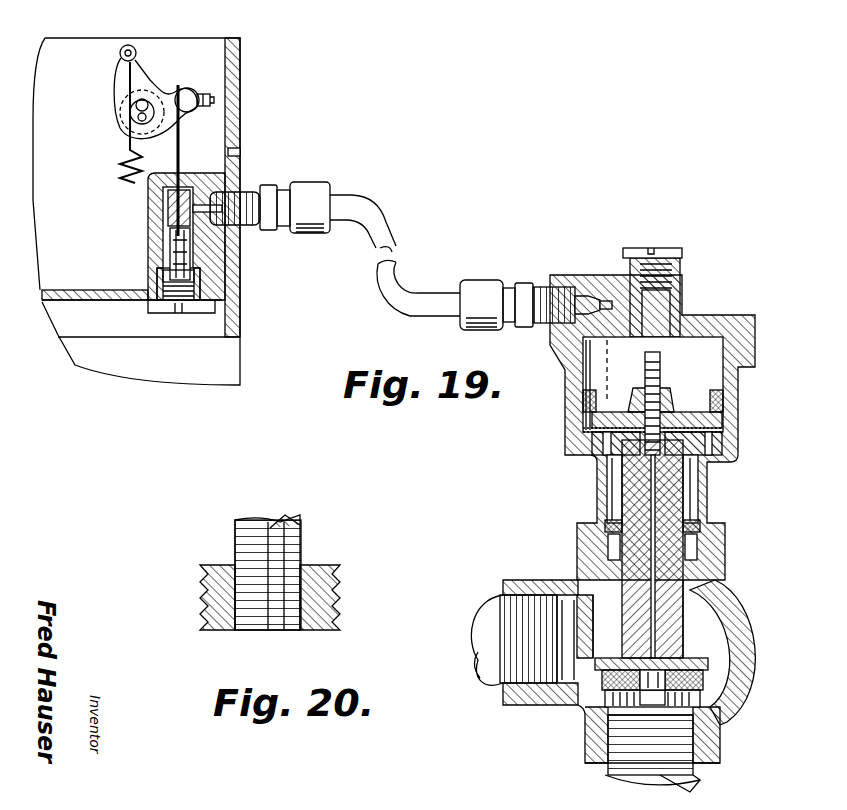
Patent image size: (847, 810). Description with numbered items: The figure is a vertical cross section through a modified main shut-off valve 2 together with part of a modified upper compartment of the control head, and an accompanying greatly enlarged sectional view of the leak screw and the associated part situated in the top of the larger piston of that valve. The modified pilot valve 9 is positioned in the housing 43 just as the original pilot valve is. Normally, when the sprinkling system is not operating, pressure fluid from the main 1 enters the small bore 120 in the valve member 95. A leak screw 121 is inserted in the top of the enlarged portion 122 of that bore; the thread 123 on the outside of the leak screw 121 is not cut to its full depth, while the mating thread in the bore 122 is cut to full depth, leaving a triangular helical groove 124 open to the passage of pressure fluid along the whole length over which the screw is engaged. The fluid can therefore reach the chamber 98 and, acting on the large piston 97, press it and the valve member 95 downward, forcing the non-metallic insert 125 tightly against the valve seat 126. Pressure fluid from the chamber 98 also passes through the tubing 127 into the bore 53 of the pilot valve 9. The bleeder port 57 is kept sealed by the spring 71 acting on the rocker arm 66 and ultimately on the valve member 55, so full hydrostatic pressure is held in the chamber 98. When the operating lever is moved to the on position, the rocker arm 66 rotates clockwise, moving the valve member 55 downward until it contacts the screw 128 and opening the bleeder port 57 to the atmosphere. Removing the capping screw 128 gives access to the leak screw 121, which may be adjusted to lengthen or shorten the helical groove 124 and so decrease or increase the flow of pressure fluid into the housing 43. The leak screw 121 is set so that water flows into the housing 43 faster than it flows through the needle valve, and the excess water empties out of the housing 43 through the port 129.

In FIG. 19, the main 1 is at (700, 782).
In FIG. 19, the main shut-off valve 2 is at (748, 640).
In FIG. 19, the pilot valve 9 is at (150, 205).
In FIG. 19, the housing 43 is at (243, 115).
In FIG. 19, the bore 53 is at (170, 236).
In FIG. 19, the valve member 55 is at (168, 192).
In FIG. 19, the bleeder port 57 is at (180, 188).
In FIG. 19, the rocker arm 66 is at (155, 78).
In FIG. 19, the spring 71 is at (128, 140).
In FIG. 19, the valve member 95 is at (685, 605).
In FIG. 19, the large piston 97 is at (735, 425).
In FIG. 19, the chamber 98 is at (623, 370).
In FIG. 19, the small bore 120 is at (660, 500).
In FIG. 19, the leak screw 121 is at (662, 356).
In FIG. 20, the leak screw 121 is at (288, 522).
In FIG. 19, the enlarged portion of the bore 122 is at (604, 470).
In FIG. 19, the thread 123 is at (662, 386).
In FIG. 20, the thread 123 is at (236, 540).
In FIG. 20, the helical groove 124 is at (310, 566).
In FIG. 19, the non-metallic insert 125 is at (580, 700).
In FIG. 19, the valve seat 126 is at (707, 712).
In FIG. 19, the tubing 127 is at (395, 232).
In FIG. 19, the capping screw 128 is at (168, 252).
In FIG. 19, the port 129 is at (242, 152).